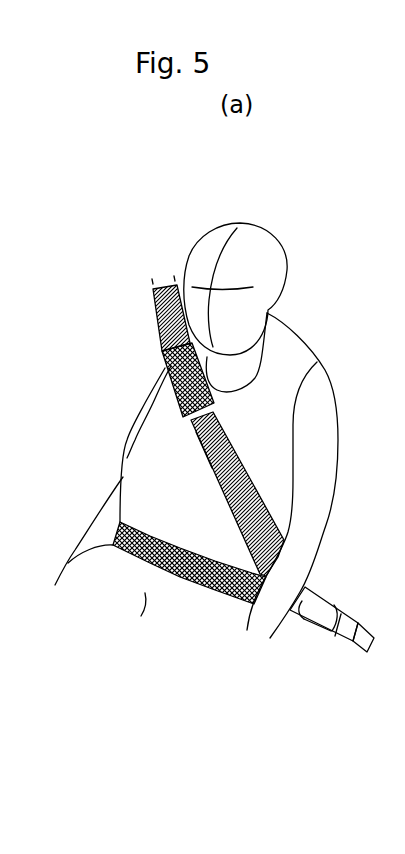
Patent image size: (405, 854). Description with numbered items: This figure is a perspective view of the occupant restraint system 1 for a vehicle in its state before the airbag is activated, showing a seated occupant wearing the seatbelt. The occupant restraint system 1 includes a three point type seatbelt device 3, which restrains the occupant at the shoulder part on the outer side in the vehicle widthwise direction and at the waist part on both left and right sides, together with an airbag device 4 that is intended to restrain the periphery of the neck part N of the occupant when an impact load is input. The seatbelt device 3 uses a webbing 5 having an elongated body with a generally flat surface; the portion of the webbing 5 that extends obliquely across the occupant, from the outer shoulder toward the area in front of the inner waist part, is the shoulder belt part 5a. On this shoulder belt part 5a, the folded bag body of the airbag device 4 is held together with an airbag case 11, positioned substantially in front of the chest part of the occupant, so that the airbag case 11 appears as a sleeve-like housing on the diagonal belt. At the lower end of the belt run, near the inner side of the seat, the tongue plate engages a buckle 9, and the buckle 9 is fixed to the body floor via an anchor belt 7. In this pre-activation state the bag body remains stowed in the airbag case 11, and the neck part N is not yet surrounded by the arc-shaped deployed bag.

The occupant restraint system 1 is at (147, 257).
The seatbelt device 3 is at (265, 483).
The airbag device 4 is at (160, 402).
The shoulder belt part 5a is at (158, 323).
The webbing 5 is at (168, 318).
The anchor belt 7 is at (362, 655).
The buckle 9 is at (346, 643).
The airbag case 11 is at (194, 442).
The neck part N is at (263, 333).